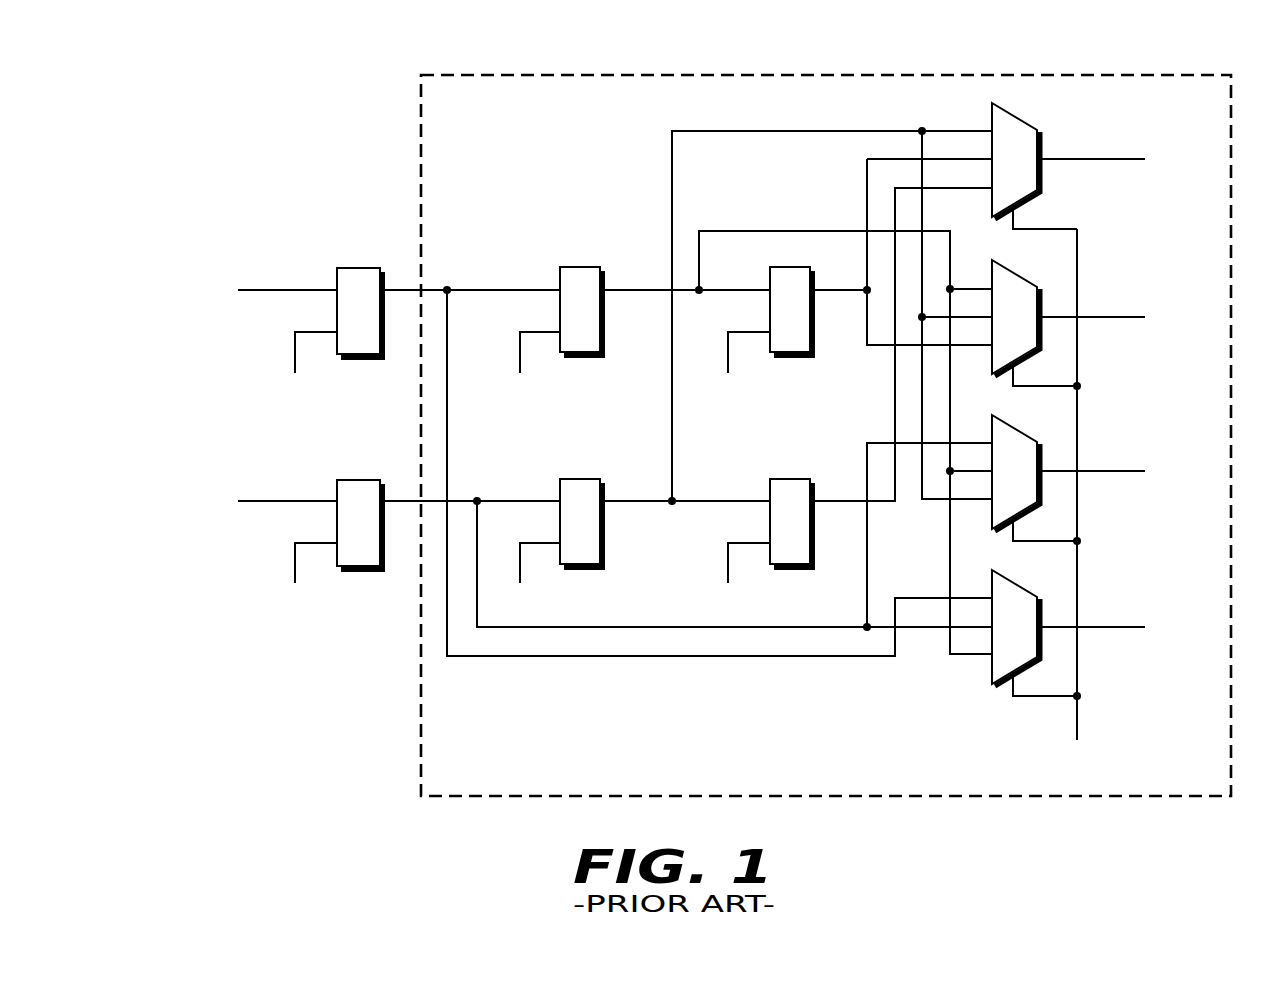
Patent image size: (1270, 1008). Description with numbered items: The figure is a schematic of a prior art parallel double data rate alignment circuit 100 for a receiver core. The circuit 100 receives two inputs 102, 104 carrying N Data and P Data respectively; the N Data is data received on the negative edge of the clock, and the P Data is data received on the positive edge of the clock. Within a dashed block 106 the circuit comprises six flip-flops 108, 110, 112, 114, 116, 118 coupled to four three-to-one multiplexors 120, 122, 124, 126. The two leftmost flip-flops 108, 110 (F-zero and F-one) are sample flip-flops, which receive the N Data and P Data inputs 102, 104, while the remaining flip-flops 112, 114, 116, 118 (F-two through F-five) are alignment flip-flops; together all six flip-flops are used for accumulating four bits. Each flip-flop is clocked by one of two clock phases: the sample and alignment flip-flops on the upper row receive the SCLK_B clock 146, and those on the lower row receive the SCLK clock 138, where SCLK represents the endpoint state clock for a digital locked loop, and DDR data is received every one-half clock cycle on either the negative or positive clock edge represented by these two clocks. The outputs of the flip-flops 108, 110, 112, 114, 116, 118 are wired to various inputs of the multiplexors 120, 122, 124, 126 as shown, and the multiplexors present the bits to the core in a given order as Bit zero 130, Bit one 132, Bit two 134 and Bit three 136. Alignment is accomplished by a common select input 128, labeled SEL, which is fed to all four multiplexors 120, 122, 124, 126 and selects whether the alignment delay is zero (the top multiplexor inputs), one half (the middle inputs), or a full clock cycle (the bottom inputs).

The circuit 100 is at (1138, 52).
The input 102 is at (284, 289).
The input 104 is at (284, 500).
The flip-flop and multiplexer block 106 is at (935, 75).
The flip-flop 108 is at (364, 267).
The flip-flop 110 is at (364, 479).
The flip-flop 112 is at (585, 267).
The flip-flop 114 is at (585, 479).
The flip-flop 116 is at (795, 267).
The flip-flop 118 is at (795, 479).
The multiplexor 120 is at (1012, 113).
The multiplexor 122 is at (1012, 270).
The multiplexor 124 is at (1012, 425).
The multiplexor 126 is at (1012, 580).
The select input 128 is at (1078, 730).
The Bit0 130 is at (1119, 156).
The Bit1 132 is at (1119, 314).
The Bit2 134 is at (1119, 469).
The Bit3 136 is at (1119, 623).
The SCLK 138 is at (290, 617).
The SCLK_B clock signal 146 is at (292, 403).